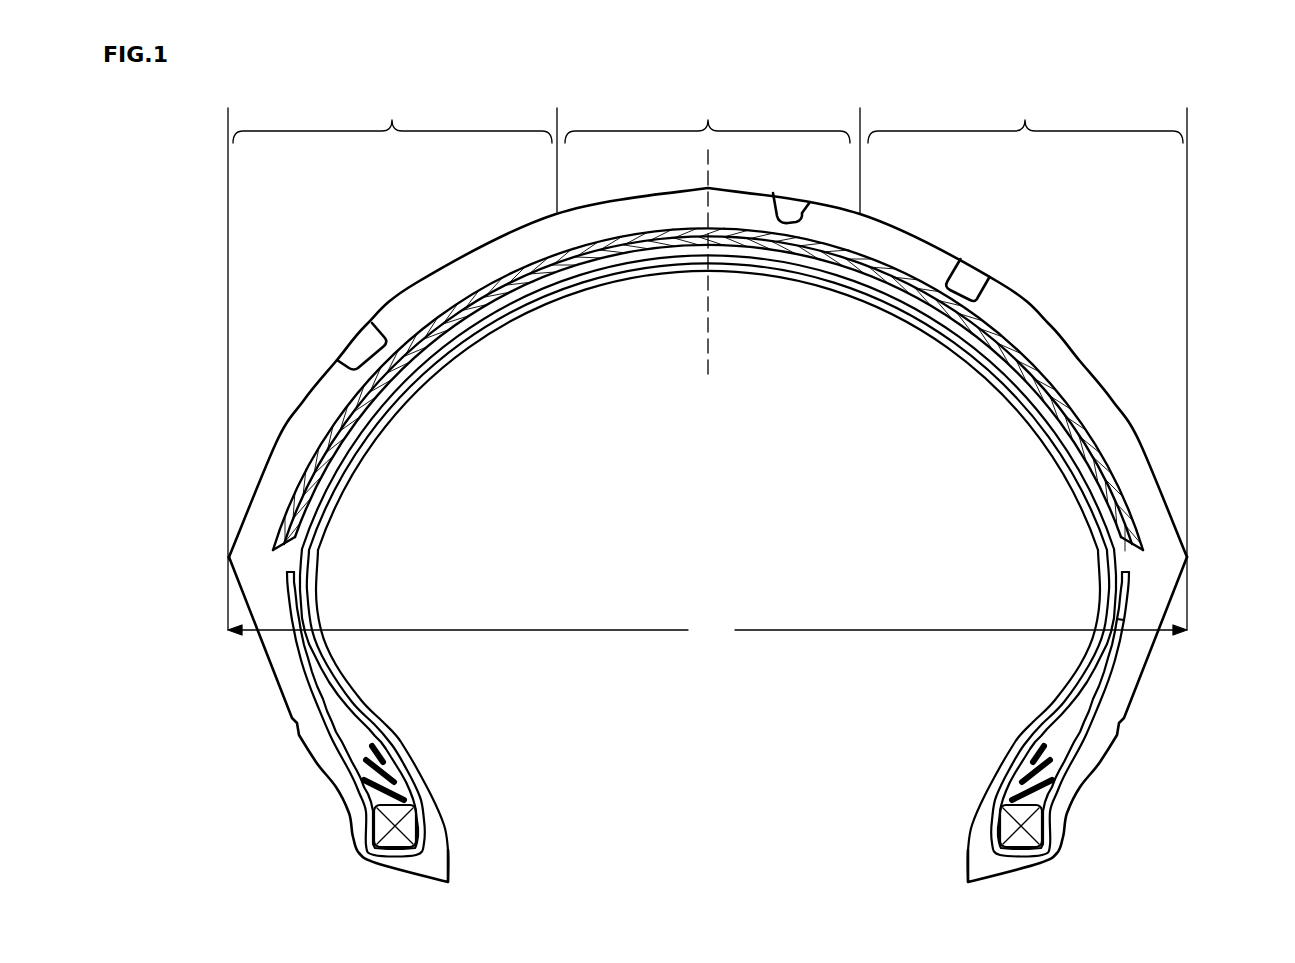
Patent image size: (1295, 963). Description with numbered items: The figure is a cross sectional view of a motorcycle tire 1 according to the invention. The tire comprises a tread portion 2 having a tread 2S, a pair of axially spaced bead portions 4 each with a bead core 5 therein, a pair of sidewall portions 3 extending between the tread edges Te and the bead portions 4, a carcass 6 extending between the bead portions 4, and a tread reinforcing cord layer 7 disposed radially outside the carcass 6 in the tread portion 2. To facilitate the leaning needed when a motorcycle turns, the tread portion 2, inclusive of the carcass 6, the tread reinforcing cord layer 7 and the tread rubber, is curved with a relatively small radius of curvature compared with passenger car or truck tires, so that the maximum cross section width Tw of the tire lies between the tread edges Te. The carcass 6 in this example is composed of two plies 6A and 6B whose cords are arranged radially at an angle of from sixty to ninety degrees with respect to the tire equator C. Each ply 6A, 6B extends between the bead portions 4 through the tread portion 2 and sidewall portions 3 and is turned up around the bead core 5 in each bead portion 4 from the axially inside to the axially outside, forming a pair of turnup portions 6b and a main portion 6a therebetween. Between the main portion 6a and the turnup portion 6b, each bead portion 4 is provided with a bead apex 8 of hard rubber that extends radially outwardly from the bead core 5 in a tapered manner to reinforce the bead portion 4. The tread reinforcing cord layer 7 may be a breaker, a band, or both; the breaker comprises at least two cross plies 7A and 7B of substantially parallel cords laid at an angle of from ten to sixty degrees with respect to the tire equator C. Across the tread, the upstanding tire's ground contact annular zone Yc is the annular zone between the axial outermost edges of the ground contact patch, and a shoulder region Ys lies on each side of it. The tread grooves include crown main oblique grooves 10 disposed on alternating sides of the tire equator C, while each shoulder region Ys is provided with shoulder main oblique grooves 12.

The motorcycle tire 1 is at (1095, 258).
The tread portion 2 is at (882, 351).
The tread 2S is at (625, 196).
The sidewall portion 3 is at (1177, 650).
The bead portion 4 is at (1030, 816).
The bead core 5 is at (1022, 835).
The carcass 6 is at (759, 568).
The carcass ply 6A is at (1070, 463).
The carcass ply 6B is at (1093, 533).
The main portion 6a is at (1093, 657).
The turnup portion 6b is at (1117, 667).
The tread reinforcing cord layer 7 is at (708, 389).
The breaker ply 7A is at (832, 263).
The breaker ply 7B is at (880, 281).
The bead apex 8 is at (1038, 768).
The crown main oblique groove 10 is at (790, 212).
The shoulder main oblique groove 12 is at (963, 280).
The tire equator C is at (708, 279).
The maximum cross section width Tw is at (707, 376).
The tread edge Te is at (228, 561).
The shoulder region Ys is at (708, 151).
The ground contact annular zone Yc is at (707, 116).